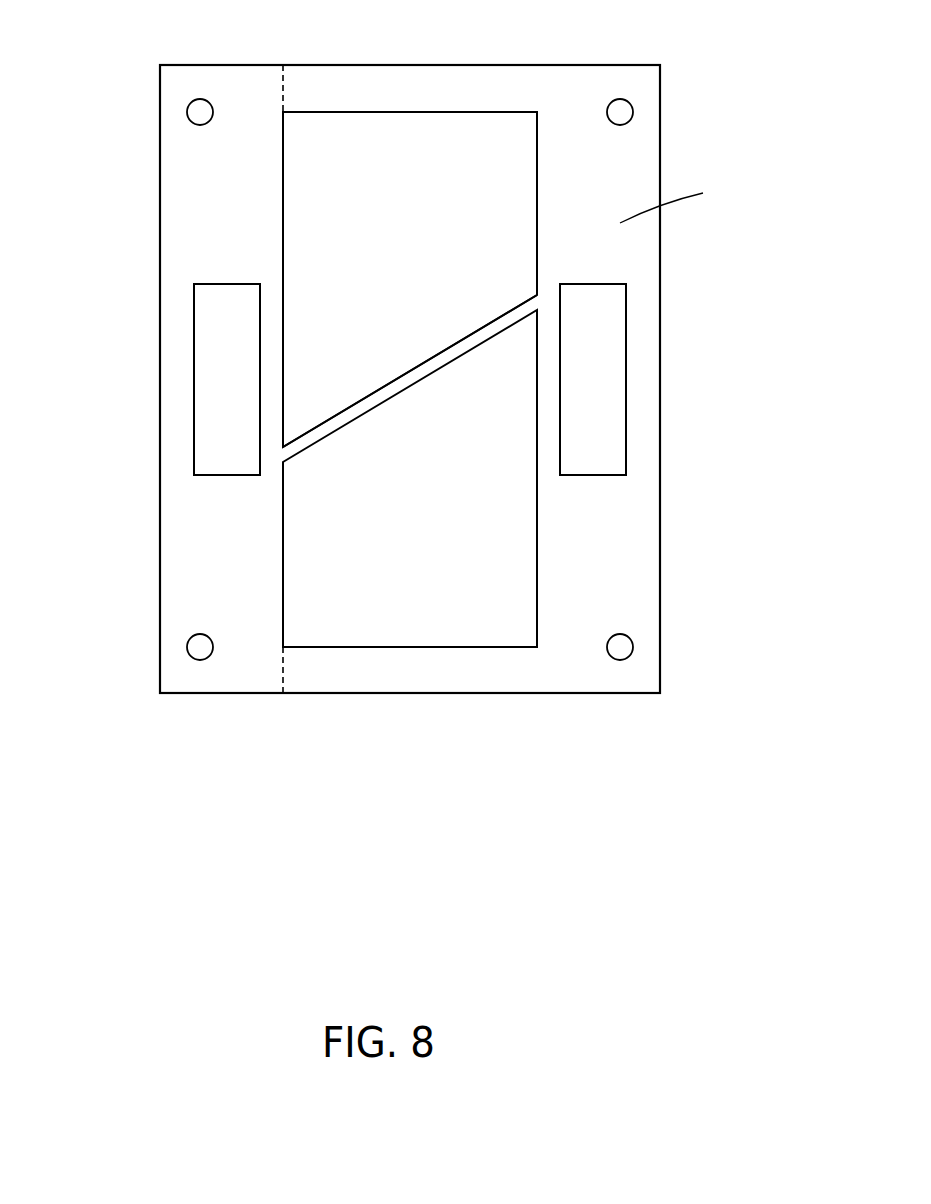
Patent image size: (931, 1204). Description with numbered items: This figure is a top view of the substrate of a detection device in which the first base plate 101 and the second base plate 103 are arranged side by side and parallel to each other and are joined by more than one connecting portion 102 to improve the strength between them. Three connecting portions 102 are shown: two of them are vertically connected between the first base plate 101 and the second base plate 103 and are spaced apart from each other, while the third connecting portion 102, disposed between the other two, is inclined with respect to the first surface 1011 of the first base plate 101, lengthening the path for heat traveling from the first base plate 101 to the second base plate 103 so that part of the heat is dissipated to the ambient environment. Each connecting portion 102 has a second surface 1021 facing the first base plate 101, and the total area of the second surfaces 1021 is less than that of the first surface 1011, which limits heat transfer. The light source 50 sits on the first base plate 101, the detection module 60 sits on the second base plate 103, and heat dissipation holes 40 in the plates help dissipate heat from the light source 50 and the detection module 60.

The first base plate 101 is at (188, 239).
The first surface 1011 is at (283, 553).
The connecting portion 102 is at (403, 87).
The second surface 1021 is at (283, 88).
The second base plate 103 is at (690, 202).
The heat dissipation hole 40 is at (200, 112).
The light source 50 is at (220, 378).
The detection module 60 is at (605, 388).